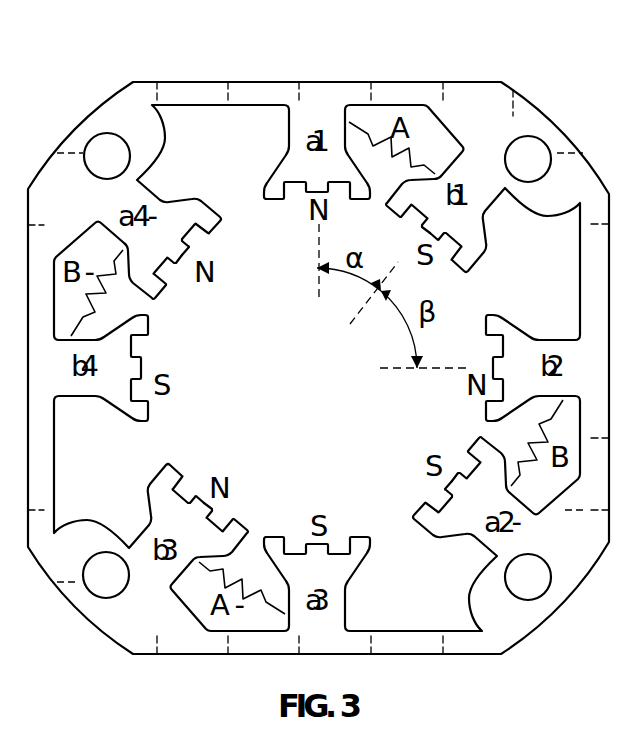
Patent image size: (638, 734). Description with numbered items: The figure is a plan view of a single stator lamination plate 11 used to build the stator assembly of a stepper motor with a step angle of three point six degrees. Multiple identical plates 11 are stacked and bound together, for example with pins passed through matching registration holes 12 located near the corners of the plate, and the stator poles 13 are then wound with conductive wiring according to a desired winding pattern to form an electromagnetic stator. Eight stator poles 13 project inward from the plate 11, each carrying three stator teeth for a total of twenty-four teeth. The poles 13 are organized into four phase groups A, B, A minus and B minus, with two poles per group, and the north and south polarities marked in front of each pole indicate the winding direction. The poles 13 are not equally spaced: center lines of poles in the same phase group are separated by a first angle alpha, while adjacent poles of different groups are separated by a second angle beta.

The stator lamination plate 11 is at (223, 97).
The registration hole 12 is at (107, 157).
The stator pole 13 is at (290, 120).